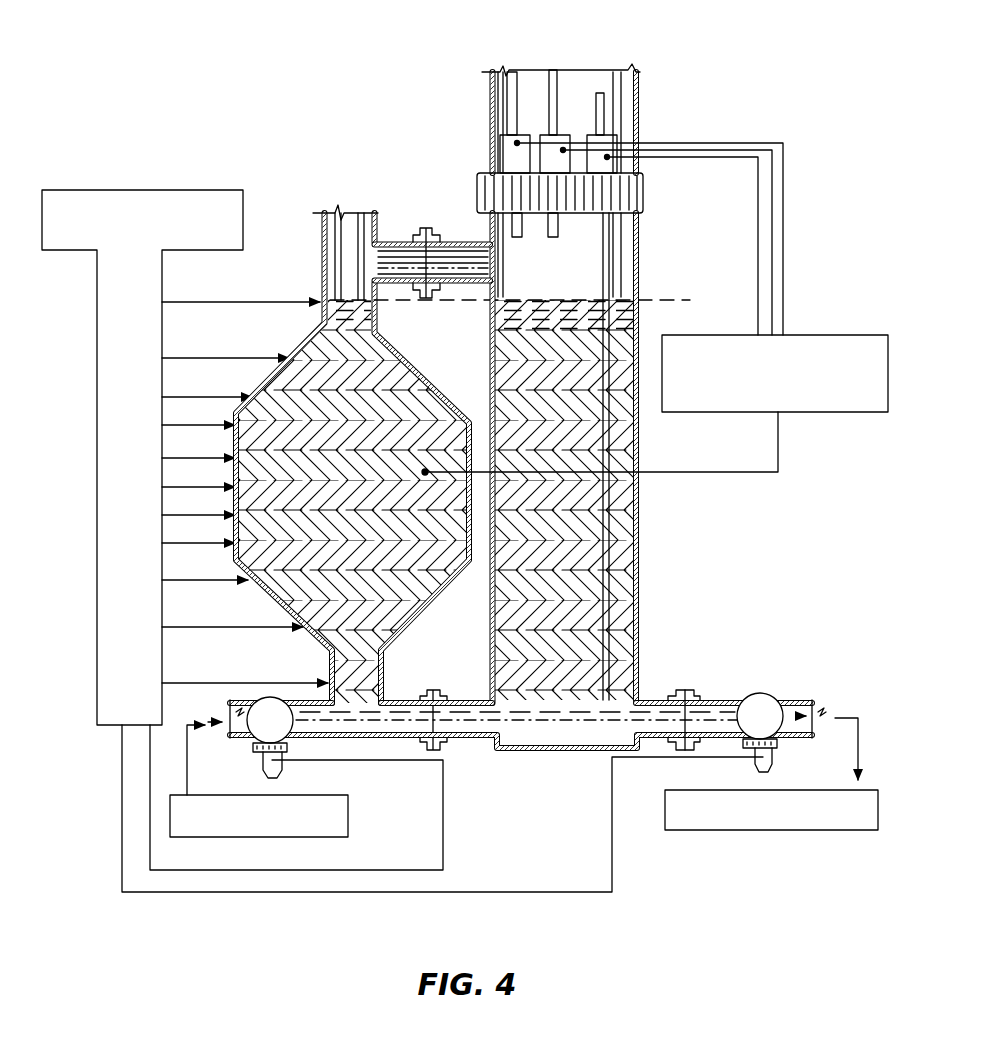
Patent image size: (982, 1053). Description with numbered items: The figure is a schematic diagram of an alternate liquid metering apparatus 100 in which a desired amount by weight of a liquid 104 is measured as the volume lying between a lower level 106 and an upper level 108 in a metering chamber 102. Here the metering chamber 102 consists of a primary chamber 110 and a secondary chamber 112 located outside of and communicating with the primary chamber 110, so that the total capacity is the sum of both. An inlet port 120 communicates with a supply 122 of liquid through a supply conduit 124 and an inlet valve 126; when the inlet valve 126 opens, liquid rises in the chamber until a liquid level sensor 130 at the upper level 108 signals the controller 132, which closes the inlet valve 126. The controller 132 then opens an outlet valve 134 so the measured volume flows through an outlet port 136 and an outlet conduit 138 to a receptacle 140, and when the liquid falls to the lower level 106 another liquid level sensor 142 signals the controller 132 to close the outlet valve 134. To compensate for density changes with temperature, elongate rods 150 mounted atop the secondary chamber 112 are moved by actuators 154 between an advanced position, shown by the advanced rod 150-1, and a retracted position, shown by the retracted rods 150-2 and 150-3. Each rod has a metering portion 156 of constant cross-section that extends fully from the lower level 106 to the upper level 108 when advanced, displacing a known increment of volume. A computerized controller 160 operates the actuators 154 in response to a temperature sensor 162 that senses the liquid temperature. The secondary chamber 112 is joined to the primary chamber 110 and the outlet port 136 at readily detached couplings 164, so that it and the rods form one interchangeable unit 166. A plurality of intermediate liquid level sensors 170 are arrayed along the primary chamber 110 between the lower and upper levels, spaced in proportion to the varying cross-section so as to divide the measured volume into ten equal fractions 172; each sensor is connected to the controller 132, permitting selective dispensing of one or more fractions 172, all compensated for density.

The liquid metering apparatus 100 is at (320, 242).
The metering chamber 102 is at (488, 410).
The liquid 104 is at (322, 442).
The lower level 106 is at (495, 688).
The upper level 108 is at (378, 294).
The primary chamber 110 is at (405, 608).
The secondary chamber 112 is at (493, 334).
The inlet port 120 is at (345, 740).
The supply 122 is at (348, 816).
The supply conduit 124 is at (240, 700).
The inlet valve 126 is at (268, 736).
The liquid level sensor 130 is at (322, 300).
The controller 132 is at (160, 190).
The outlet valve 134 is at (768, 730).
The outlet port 136 is at (698, 690).
The outlet conduit 138 is at (795, 698).
The receptacle 140 is at (760, 830).
The liquid level sensor 142 is at (325, 678).
The elongate rods 150 is at (515, 103).
The advanced rod 150-1 is at (605, 100).
The retracted rod 150-2 is at (553, 70).
The retracted rod 150-3 is at (507, 72).
The actuators 154 is at (597, 160).
The metering portion 156 is at (642, 468).
The computerized controller 160 is at (850, 335).
The temperature sensor 162 is at (420, 478).
The couplings 164 is at (430, 228).
The interchangeable unit 166 is at (645, 600).
The intermediate liquid level sensors 170 is at (240, 397).
The equal fractions 172 is at (290, 600).